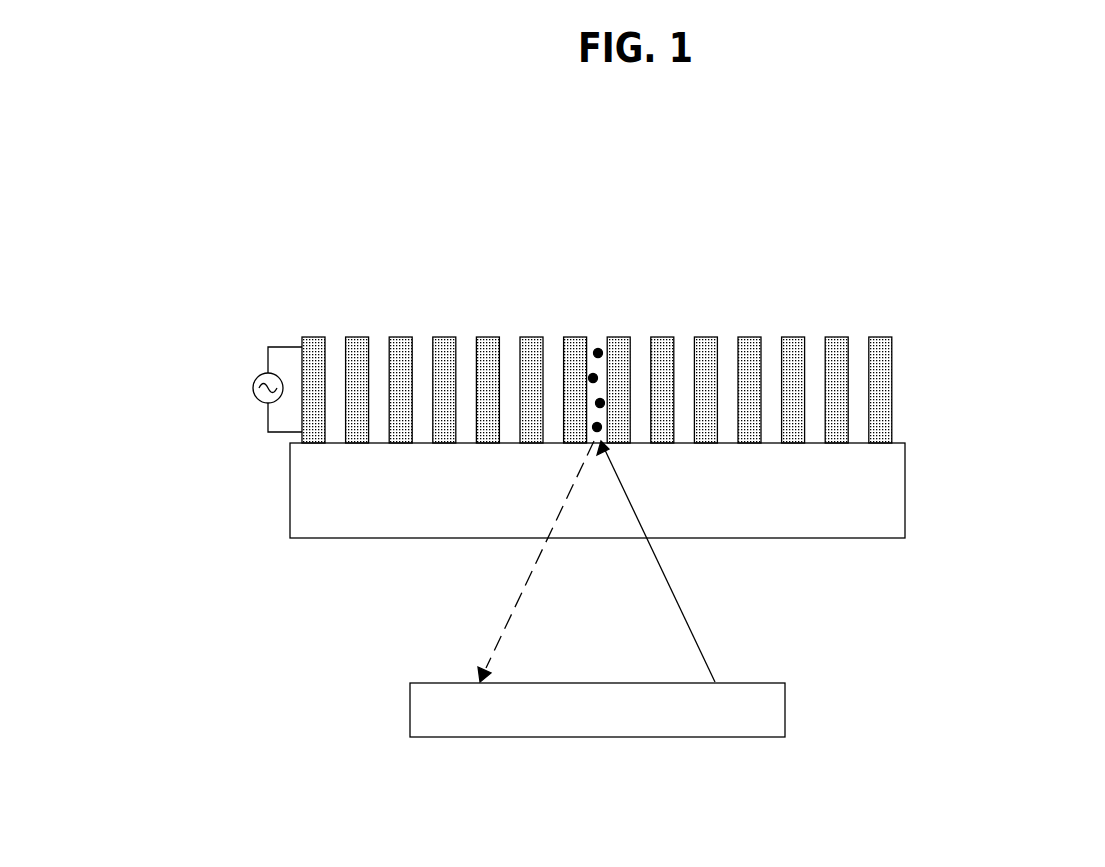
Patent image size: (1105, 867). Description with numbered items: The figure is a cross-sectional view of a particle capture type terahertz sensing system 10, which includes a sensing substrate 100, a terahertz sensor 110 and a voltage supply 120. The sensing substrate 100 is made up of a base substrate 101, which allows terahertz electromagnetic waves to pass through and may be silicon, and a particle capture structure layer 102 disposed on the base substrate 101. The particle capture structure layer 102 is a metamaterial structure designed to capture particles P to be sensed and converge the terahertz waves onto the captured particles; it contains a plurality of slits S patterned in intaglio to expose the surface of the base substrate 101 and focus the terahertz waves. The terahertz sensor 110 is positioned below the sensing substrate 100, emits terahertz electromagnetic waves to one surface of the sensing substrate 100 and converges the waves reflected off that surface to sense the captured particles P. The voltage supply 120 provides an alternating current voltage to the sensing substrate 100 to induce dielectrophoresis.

The particle capture type terahertz sensing system 10 is at (423, 264).
The sensing substrate 100 is at (683, 437).
The base substrate 101 is at (905, 484).
The particle capture structure layer 102 is at (892, 402).
The terahertz sensor 110 is at (785, 710).
The voltage supply 120 is at (258, 376).
The particles P is at (598, 345).
The slits S is at (641, 350).